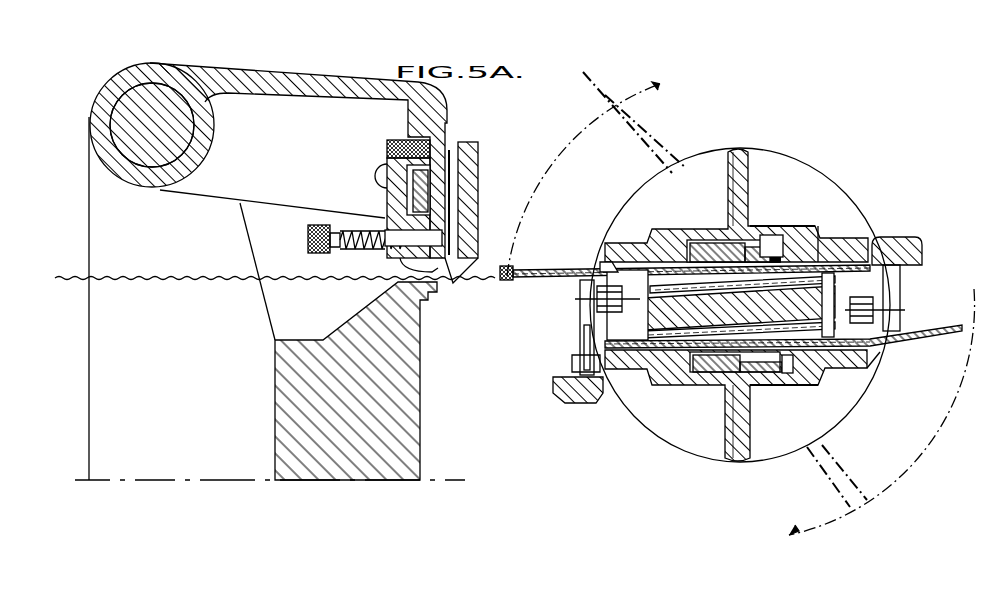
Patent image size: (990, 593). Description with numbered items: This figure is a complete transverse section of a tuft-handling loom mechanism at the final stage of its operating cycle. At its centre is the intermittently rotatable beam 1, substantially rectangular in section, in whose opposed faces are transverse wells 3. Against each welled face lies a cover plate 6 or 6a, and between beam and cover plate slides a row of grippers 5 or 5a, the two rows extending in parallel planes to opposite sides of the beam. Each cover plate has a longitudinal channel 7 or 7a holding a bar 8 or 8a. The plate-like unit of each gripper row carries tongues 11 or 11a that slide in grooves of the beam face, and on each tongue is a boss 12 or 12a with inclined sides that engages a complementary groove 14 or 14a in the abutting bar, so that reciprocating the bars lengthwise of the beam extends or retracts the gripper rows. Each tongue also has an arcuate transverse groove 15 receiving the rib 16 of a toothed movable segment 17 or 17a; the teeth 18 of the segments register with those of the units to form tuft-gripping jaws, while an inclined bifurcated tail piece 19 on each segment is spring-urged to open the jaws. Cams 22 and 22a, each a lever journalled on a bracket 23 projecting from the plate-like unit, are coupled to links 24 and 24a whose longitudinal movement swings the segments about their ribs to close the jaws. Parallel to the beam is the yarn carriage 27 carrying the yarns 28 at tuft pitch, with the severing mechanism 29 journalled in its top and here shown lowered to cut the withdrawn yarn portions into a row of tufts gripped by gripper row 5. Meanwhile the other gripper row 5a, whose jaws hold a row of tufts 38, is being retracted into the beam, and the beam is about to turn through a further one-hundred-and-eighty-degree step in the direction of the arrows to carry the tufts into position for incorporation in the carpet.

The intermittently rotatable beam 1 is at (822, 300).
The transverse wells 3 is at (770, 258).
The row of grippers 5 is at (567, 218).
The row of grippers 5a is at (909, 389).
The cover plate 6 is at (748, 234).
The cover plate 6a is at (668, 392).
The channel 7 is at (688, 246).
The channel 7a is at (796, 372).
The bar 8 is at (702, 252).
The bar 8a is at (770, 373).
The tongues 11 is at (830, 260).
The tongues 11a is at (832, 368).
The boss 12 is at (795, 256).
The boss 12a is at (727, 376).
The grooves 14 is at (708, 250).
The grooves 14a is at (754, 400).
The transverse groove 15 is at (607, 255).
The rib 16 is at (870, 370).
The toothed movable segment 17 is at (560, 282).
The toothed movable segment 17a is at (930, 326).
The teeth 18 is at (504, 282).
The tail piece 19 is at (832, 336).
The cams 22 is at (576, 338).
The cams 22a is at (900, 298).
The bracket 23 is at (598, 288).
The link 24 is at (562, 396).
The link 24a is at (912, 240).
The yarn carriage 27 is at (285, 400).
The yarns 28 is at (190, 286).
The mechanism for severing the tufts 29 is at (294, 76).
The row of tufts 38 is at (481, 290).